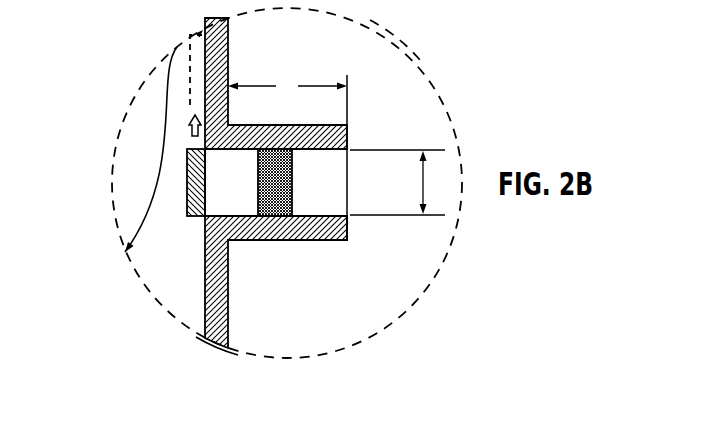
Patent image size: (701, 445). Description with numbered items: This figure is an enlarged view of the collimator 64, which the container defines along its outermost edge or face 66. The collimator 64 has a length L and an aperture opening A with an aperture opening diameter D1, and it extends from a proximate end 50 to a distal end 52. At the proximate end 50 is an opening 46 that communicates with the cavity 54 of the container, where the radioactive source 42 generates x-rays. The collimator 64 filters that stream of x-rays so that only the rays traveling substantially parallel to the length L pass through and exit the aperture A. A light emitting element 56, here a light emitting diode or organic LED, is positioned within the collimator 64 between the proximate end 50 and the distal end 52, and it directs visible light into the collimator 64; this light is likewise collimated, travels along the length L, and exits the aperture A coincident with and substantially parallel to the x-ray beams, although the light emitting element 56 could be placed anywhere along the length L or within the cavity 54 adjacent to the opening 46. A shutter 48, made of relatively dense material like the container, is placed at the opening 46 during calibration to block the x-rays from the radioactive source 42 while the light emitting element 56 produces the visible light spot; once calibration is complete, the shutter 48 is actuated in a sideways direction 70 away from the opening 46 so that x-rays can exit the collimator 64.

The radioactive source 42 is at (140, 137).
The opening 46 is at (206, 214).
The shutter 48 is at (184, 62).
The proximate end 50 is at (198, 226).
The distal end 52 is at (351, 227).
The cavity 54 is at (146, 242).
The light emitting element 56 is at (293, 190).
The collimator 64 is at (355, 68).
The outermost edge or face 66 is at (228, 287).
The sideways direction 70 is at (186, 148).
The aperture opening A is at (349, 184).
The length L is at (287, 87).
The aperture opening diameter D1 is at (404, 182).